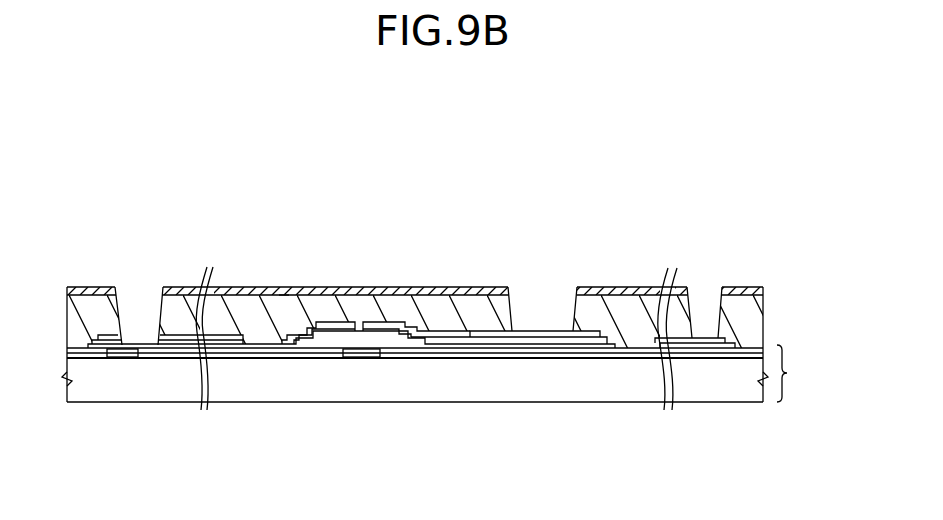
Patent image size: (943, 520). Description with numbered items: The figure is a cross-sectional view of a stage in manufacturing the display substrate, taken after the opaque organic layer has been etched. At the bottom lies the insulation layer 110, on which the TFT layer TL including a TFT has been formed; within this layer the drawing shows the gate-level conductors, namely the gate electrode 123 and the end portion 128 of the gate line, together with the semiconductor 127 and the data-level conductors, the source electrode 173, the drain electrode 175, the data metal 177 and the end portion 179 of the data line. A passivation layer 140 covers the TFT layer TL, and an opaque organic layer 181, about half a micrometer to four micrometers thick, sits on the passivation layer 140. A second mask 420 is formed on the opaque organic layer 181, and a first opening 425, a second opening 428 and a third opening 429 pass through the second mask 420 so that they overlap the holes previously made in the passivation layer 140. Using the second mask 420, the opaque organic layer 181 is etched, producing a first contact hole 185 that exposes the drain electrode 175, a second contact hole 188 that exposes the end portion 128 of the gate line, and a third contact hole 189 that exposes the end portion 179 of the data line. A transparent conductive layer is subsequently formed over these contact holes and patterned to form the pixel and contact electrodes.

The insulation layer 110 is at (93, 383).
The second contact hole 188 is at (133, 350).
The end portion of gate line 128 is at (177, 350).
The source electrode 173 is at (300, 345).
The gate electrode 123 is at (362, 357).
The drain electrode 175 is at (428, 347).
The semiconductor layer 127 is at (495, 354).
The first contact hole 185 is at (543, 332).
The data metal layer 177 is at (586, 340).
The end portion of data line 179 is at (673, 348).
The third contact hole 189 is at (714, 332).
The opaque organic layer 181 is at (758, 318).
The passivation layer 140 is at (760, 345).
The TFT layer TL is at (796, 373).
The second mask 420 is at (283, 296).
The first opening 425 is at (577, 279).
The second opening 428 is at (163, 279).
The third opening 429 is at (725, 279).